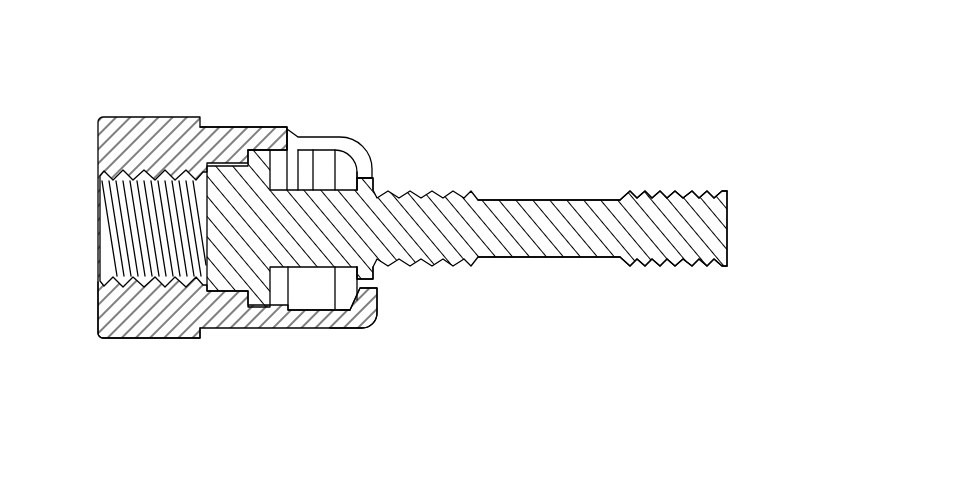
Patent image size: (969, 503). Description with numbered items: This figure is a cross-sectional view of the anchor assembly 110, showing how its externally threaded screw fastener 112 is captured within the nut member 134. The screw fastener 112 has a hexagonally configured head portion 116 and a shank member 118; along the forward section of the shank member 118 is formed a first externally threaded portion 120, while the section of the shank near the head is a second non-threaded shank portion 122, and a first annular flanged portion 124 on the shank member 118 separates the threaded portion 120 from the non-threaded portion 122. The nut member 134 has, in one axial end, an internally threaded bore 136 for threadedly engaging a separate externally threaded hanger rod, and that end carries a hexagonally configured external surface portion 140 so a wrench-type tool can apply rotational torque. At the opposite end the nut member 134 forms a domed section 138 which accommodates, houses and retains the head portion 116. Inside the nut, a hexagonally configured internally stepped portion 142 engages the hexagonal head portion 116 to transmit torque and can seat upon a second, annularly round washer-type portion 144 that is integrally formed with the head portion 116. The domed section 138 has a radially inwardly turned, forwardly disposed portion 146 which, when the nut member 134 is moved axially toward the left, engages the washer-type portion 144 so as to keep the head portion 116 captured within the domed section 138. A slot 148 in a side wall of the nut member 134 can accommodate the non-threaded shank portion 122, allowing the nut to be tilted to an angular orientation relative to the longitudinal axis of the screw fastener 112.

The anchor assembly 110 is at (600, 123).
The externally threaded screw fastener 112 is at (727, 238).
The head portion 116 is at (228, 247).
The shank member 118 is at (545, 242).
The first externally threaded portion 120 is at (678, 190).
The second non-threaded shank portion 122 is at (313, 190).
The first annular flanged portion 124 is at (373, 185).
The nut member 134 is at (155, 122).
The internally threaded bore 136 is at (110, 251).
The domed section 138 is at (347, 322).
The hexagonally configured external surface portion 140 is at (138, 338).
The hexagonally configured internally stepped portion 142 is at (222, 150).
The second flanged or washer-type portion 144 is at (272, 287).
The radially inwardly turned forwardly disposed portion 146 is at (370, 288).
The slot 148 is at (340, 142).